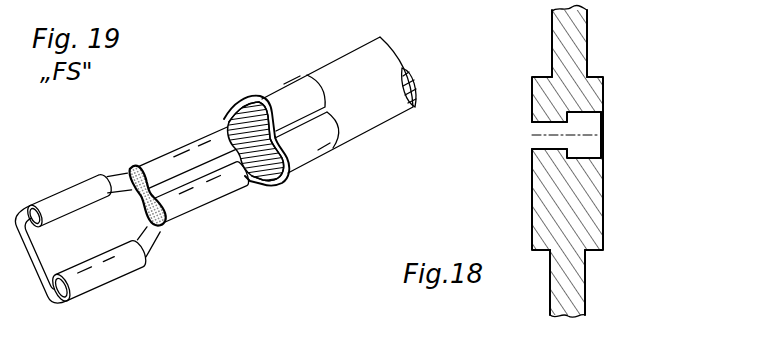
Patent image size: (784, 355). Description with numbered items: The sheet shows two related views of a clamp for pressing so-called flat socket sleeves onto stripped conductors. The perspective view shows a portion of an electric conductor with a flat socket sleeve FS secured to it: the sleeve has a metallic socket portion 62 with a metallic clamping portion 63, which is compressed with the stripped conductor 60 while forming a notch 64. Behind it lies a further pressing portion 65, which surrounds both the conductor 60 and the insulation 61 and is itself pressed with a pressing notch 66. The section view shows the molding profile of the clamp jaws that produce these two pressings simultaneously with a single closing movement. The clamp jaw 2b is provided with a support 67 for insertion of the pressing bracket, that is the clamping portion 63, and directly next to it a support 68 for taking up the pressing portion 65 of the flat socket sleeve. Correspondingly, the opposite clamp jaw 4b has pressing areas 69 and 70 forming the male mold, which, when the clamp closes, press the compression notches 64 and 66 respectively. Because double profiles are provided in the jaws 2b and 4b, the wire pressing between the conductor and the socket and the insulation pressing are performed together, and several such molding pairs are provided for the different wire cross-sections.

In FIG. 19, the stripped conductor 60 is at (155, 215).
In FIG. 19, the insulation 61 is at (348, 110).
In FIG. 19, the metallic socket portion 62 is at (113, 265).
In FIG. 19, the metallic clamping portion 63 is at (200, 200).
In FIG. 19, the notch 64 is at (187, 180).
In FIG. 19, the further pressing portion 65 is at (313, 148).
In FIG. 19, the pressing notch 66 is at (300, 127).
In FIG. 18, the support 67 is at (540, 148).
In FIG. 18, the support 68 is at (588, 157).
In FIG. 18, the pressing area 69 is at (542, 120).
In FIG. 18, the pressing area 70 is at (585, 113).
In FIG. 18, the clamp jaw 4b is at (567, 38).
In FIG. 18, the clamp jaw 2b is at (568, 280).